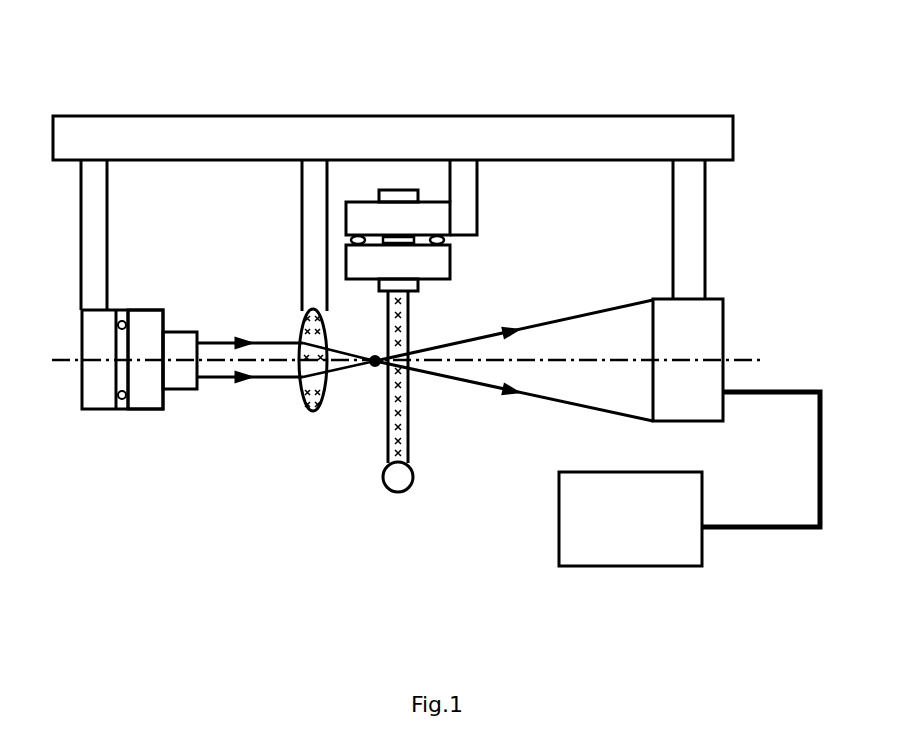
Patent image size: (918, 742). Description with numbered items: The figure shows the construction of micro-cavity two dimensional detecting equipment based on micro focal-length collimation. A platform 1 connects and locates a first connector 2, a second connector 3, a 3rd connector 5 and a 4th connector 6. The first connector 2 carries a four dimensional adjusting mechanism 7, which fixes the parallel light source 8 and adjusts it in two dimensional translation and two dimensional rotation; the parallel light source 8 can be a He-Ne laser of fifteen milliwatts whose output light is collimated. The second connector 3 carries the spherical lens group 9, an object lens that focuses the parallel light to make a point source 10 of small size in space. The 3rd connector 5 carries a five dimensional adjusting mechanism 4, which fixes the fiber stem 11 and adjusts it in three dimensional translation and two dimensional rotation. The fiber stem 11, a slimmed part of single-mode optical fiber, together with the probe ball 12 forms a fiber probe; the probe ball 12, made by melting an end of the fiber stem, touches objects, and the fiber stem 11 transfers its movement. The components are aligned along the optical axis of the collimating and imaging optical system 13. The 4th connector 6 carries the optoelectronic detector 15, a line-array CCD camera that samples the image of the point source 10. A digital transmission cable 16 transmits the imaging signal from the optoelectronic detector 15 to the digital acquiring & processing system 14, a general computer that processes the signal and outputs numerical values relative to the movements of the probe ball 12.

The platform 1 is at (77, 140).
The first connector 2 is at (93, 180).
The second connector 3 is at (313, 182).
The five dimensional adjusting mechanism 4 is at (403, 217).
The 3rd connector 5 is at (463, 178).
The 4th connector 6 is at (688, 190).
The four dimensional adjusting mechanism 7 is at (102, 387).
The parallel light source 8 is at (183, 372).
The spherical lens group 9 is at (303, 385).
The point source 10 is at (375, 362).
The fiber stem 11 is at (400, 410).
The probe ball 12 is at (398, 477).
The optical axis of collimating and imaging optical system 13 is at (558, 362).
The digital acquiring & processing system 14 is at (592, 522).
The optoelectronic detector 15 is at (692, 389).
The digital transmission cable 16 is at (783, 527).